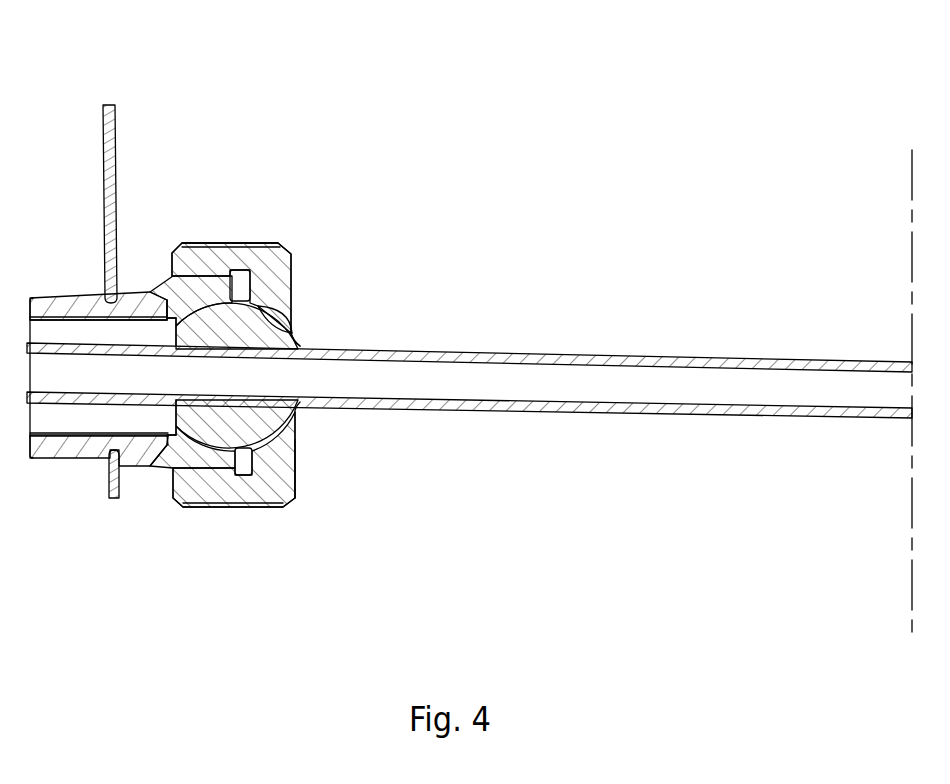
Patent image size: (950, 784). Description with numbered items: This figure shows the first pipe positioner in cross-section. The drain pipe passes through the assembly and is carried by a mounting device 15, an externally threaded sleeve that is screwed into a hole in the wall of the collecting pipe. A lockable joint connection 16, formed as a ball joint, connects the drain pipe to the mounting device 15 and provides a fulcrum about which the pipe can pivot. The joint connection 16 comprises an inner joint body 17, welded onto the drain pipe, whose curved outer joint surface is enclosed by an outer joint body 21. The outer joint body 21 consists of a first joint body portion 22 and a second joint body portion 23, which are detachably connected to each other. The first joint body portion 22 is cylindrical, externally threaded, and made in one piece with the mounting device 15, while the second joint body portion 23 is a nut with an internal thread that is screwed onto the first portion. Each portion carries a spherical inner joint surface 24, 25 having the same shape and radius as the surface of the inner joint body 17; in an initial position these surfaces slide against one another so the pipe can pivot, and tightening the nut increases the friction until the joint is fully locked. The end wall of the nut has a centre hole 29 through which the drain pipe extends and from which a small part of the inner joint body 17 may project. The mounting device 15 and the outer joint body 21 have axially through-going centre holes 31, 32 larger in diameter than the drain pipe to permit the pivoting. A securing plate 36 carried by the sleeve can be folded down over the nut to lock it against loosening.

The mounting device 15 is at (36, 296).
The lockable joint connection 16 is at (212, 228).
The inner joint body 17 is at (298, 411).
The outer joint body 21 is at (280, 327).
The first joint body portion 22 is at (162, 292).
The second joint body portion 23 is at (245, 242).
The inner joint surface 24 is at (185, 418).
The inner joint surface 25 is at (297, 462).
The centre hole 29 is at (302, 315).
The centre hole 31 is at (67, 423).
The centre hole 32 is at (298, 333).
The securing plate 36 is at (118, 120).